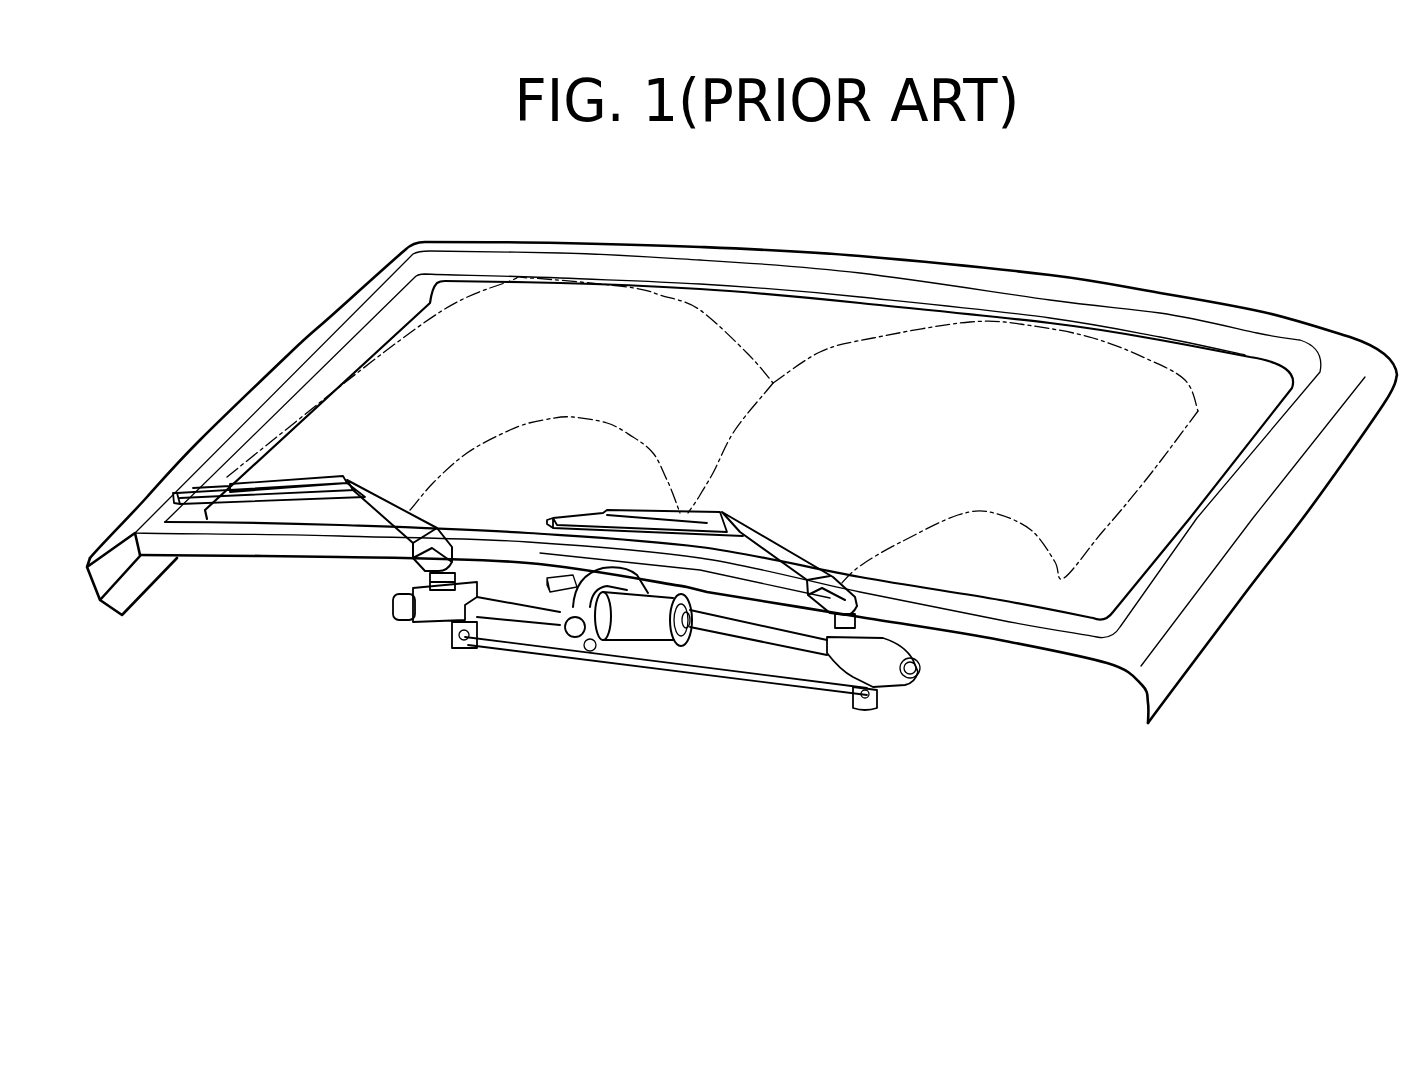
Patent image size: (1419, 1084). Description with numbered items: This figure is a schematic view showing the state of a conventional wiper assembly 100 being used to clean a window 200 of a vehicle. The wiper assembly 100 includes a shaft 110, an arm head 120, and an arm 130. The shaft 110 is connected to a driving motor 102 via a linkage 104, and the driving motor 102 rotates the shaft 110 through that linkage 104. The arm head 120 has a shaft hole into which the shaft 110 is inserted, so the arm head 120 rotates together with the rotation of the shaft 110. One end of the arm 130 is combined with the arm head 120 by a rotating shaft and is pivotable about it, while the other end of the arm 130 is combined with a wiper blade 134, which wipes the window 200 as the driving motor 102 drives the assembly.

The wiper assembly 100 is at (335, 758).
The driving motor 102 is at (638, 628).
The linkage 104 is at (763, 683).
The shaft 110 is at (452, 607).
The arm head 120 is at (435, 552).
The arm 130 is at (393, 510).
The wiper blade 134 is at (280, 508).
The window 200 is at (1251, 375).